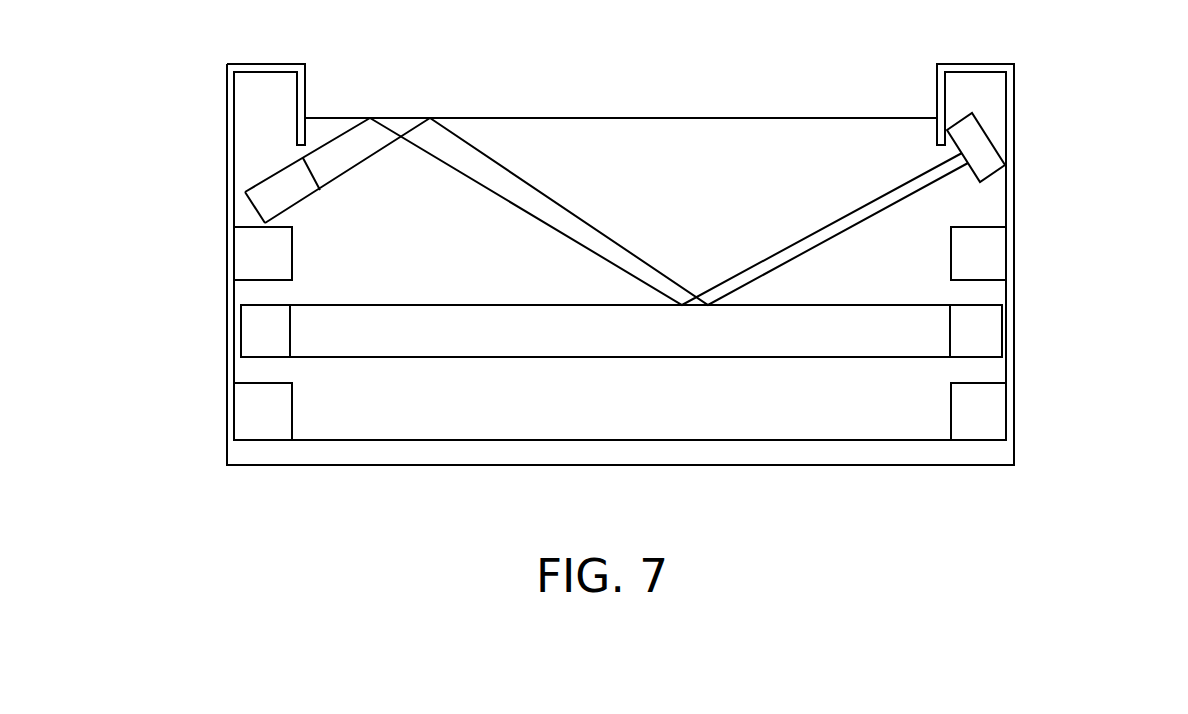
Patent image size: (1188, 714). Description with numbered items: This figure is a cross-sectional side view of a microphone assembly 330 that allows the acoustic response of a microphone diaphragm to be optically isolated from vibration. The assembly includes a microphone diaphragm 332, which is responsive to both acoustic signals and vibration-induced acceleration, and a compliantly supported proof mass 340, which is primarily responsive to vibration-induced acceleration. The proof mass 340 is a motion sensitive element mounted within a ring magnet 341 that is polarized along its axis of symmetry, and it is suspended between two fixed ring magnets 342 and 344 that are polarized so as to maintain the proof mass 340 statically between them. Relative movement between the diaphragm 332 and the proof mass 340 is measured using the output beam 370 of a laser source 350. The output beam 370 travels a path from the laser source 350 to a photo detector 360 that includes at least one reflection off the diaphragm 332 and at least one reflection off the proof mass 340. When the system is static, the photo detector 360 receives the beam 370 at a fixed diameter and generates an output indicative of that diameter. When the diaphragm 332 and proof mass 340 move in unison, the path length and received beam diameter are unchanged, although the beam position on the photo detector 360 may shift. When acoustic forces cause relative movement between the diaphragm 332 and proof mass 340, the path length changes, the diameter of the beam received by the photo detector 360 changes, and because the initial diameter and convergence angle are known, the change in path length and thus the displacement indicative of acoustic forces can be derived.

The microphone assembly 330 is at (186, 397).
The microphone diaphragm 332 is at (562, 118).
The proof mass 340 is at (437, 341).
The ring magnet 341 is at (992, 328).
The fixed ring magnet 342 is at (997, 250).
The fixed ring magnet 344 is at (998, 405).
The laser source 350 is at (265, 187).
The photo detector 360 is at (983, 155).
The output beam 370 is at (343, 156).